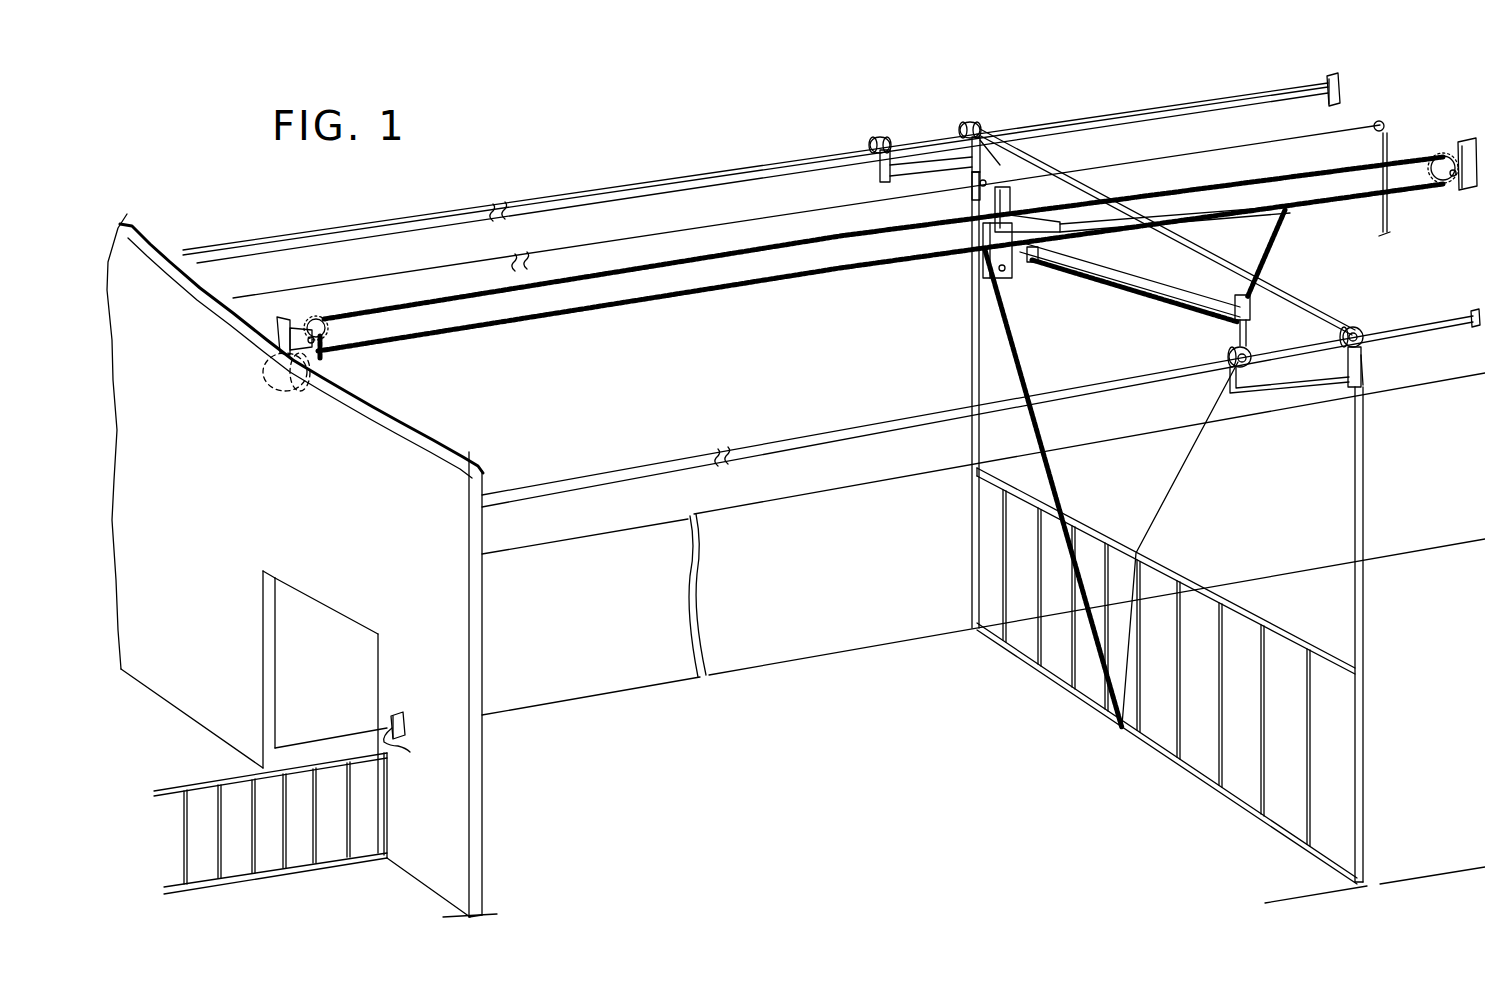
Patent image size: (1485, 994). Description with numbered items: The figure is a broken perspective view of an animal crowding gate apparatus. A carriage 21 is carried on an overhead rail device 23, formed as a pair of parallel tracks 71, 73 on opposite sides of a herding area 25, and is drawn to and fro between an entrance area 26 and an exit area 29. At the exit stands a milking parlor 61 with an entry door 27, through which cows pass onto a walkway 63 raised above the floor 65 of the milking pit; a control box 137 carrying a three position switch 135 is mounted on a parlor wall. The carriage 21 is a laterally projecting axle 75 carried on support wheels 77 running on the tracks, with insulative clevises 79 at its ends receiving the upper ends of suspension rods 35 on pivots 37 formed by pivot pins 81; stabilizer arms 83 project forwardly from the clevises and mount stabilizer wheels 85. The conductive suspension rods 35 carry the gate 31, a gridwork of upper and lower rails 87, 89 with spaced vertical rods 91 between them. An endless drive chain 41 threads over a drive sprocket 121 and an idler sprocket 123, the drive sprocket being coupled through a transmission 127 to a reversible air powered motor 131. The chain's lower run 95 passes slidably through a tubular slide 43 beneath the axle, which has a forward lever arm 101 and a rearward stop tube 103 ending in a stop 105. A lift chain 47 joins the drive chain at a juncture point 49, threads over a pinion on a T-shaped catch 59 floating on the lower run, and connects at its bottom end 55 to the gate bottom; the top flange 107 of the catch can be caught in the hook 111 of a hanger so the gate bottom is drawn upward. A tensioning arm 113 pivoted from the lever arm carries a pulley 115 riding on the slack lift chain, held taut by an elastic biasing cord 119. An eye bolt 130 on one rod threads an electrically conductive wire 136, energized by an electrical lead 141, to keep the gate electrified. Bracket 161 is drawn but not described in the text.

The carriage 21 is at (1310, 291).
The rail device 23 is at (1128, 87).
The herding area 25 is at (810, 752).
The entrance area 26 is at (1465, 509).
The entry door 27 is at (282, 673).
The exit area 29 is at (340, 704).
The gate 31 is at (1201, 676).
The suspension rods 35 is at (972, 346).
The pivots 37 is at (995, 160).
The drive chain 41 is at (1402, 150).
The tubular slide 43 is at (1112, 220).
The lift chain 47 is at (1024, 331).
The juncture point 49 is at (1290, 212).
The bottom end of lift chain 55 is at (1118, 730).
The catch 59 is at (985, 262).
The milking parlor 61 is at (302, 565).
The walkway 63 is at (270, 817).
The floor 65 is at (275, 878).
The track 71 is at (704, 174).
The track 73 is at (666, 452).
The axle 75 is at (1280, 289).
The support wheels 77 is at (972, 124).
The clevises 79 is at (970, 152).
The pivot pins 81 is at (1351, 398).
The stabilizer arms 83 is at (1258, 385).
The stabilizer wheels 85 is at (880, 142).
The upper rail 87 is at (1189, 577).
The lower rail 89 is at (1166, 758).
The vertical rods 91 is at (1192, 672).
The lower run 95 is at (1458, 188).
The lever arm 101 is at (1100, 235).
The stop tube 103 is at (1209, 215).
The stop 105 is at (1284, 197).
The top flange 107 is at (983, 240).
The hook 111 is at (1065, 220).
The tensioning arm 113 is at (1150, 292).
The pulley 115 is at (1236, 312).
The elastic biasing cord 119 is at (1188, 454).
The drive sprocket 121 is at (330, 318).
The idler sprocket 123 is at (1446, 159).
The transmission 127 is at (327, 361).
The eye bolt 130 is at (972, 208).
The air powered motor 131 is at (270, 382).
The three position switch 135 is at (420, 748).
The electrically conductive wire 136 is at (734, 221).
The control box 137 is at (403, 723).
The electrical lead 141 is at (1389, 226).
The bracket 161 is at (1032, 197).